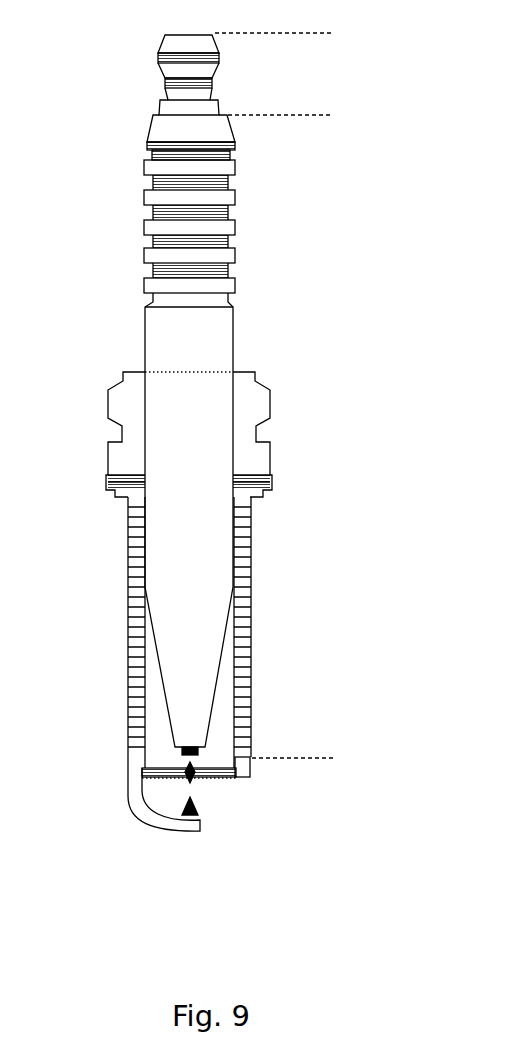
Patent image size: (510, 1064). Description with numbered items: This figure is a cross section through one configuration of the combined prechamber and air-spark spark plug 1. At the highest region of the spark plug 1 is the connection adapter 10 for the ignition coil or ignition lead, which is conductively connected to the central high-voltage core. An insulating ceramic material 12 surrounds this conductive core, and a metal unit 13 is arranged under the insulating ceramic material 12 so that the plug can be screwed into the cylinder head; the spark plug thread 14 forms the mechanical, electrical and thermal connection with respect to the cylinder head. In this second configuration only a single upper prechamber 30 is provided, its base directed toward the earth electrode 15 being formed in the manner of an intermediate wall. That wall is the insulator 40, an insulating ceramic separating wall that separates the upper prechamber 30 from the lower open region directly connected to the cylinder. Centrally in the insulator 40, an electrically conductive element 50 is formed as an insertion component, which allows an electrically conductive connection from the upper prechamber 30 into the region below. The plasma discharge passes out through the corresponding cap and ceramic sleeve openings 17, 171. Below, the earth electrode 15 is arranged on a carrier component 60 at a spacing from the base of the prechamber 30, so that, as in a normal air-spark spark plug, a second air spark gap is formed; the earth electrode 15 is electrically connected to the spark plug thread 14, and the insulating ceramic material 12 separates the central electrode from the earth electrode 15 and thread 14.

The spark plug 1 is at (133, 113).
The connection adapter 10 is at (277, 80).
The insulating ceramic material 12 is at (243, 338).
The metal unit 13 is at (305, 442).
The spark plug thread 14 is at (252, 642).
The upper prechamber 30 is at (157, 710).
The electrically conductive element 50 is at (180, 768).
The front end face of metal shell 17, 171 is at (250, 765).
The insulator 40 is at (220, 773).
The earth electrode 15 is at (203, 805).
The carrier component 60 is at (140, 812).